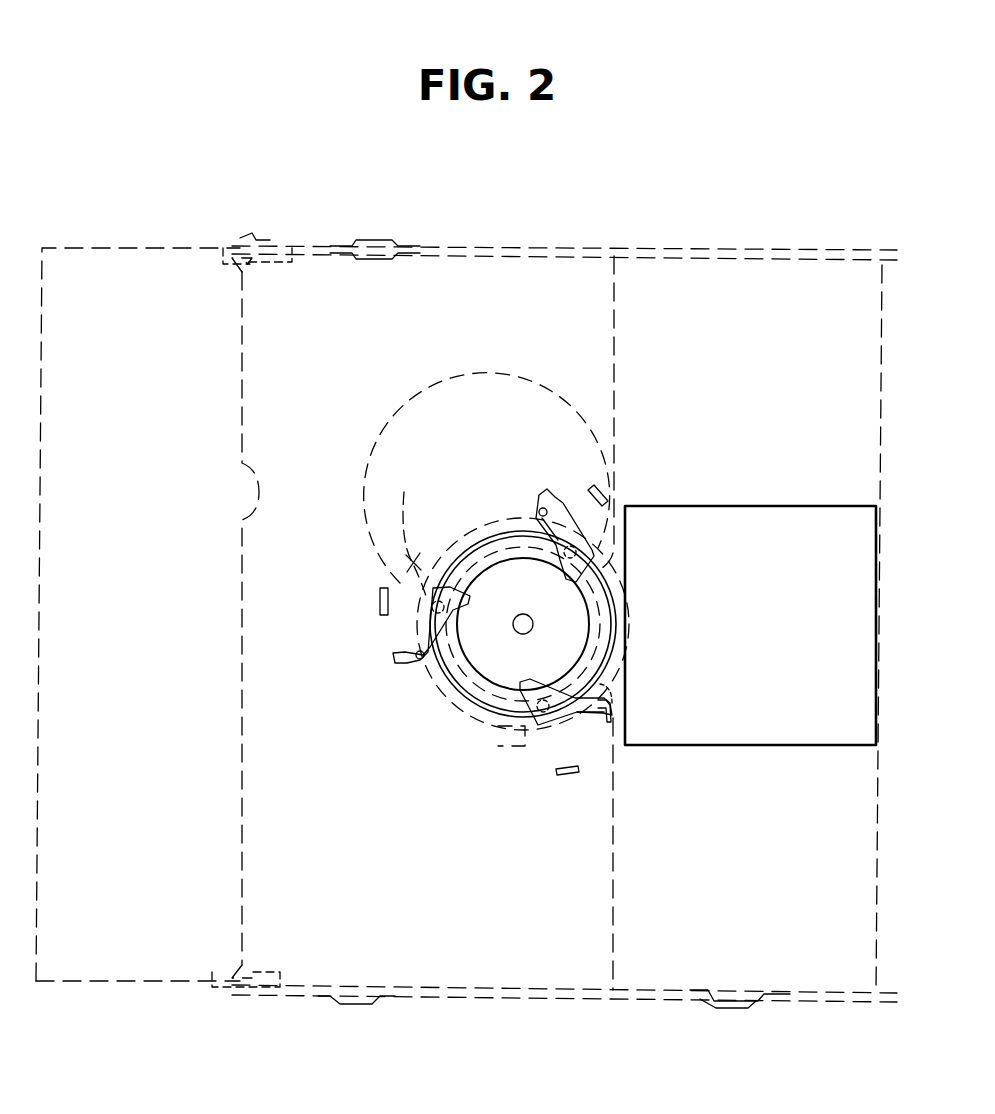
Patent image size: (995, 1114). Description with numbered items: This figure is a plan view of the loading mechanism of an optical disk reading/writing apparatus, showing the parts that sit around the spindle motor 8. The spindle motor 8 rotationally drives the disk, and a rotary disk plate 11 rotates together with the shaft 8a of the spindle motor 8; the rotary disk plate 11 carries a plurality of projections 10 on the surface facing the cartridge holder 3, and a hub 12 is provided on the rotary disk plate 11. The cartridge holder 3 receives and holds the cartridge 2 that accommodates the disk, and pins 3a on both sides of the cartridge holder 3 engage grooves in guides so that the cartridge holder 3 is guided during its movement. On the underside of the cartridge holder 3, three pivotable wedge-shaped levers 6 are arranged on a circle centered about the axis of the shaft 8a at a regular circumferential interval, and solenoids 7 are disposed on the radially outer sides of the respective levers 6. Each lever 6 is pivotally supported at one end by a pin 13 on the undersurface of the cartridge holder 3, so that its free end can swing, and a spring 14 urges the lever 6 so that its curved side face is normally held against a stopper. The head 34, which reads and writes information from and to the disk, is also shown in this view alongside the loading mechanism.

The cartridge 2 is at (150, 262).
The cartridge holder 3 is at (266, 246).
The pin 3a is at (360, 240).
The wedge-shaped lever 6 is at (553, 508).
The solenoid 7 is at (377, 603).
The spindle motor 8 is at (460, 720).
The shaft 8a is at (510, 631).
The projection 10 is at (403, 527).
The rotary disk plate 11 is at (603, 585).
The hub 12 is at (568, 630).
The pin 13 is at (582, 715).
The spring 14 is at (608, 726).
The head 34 is at (790, 715).